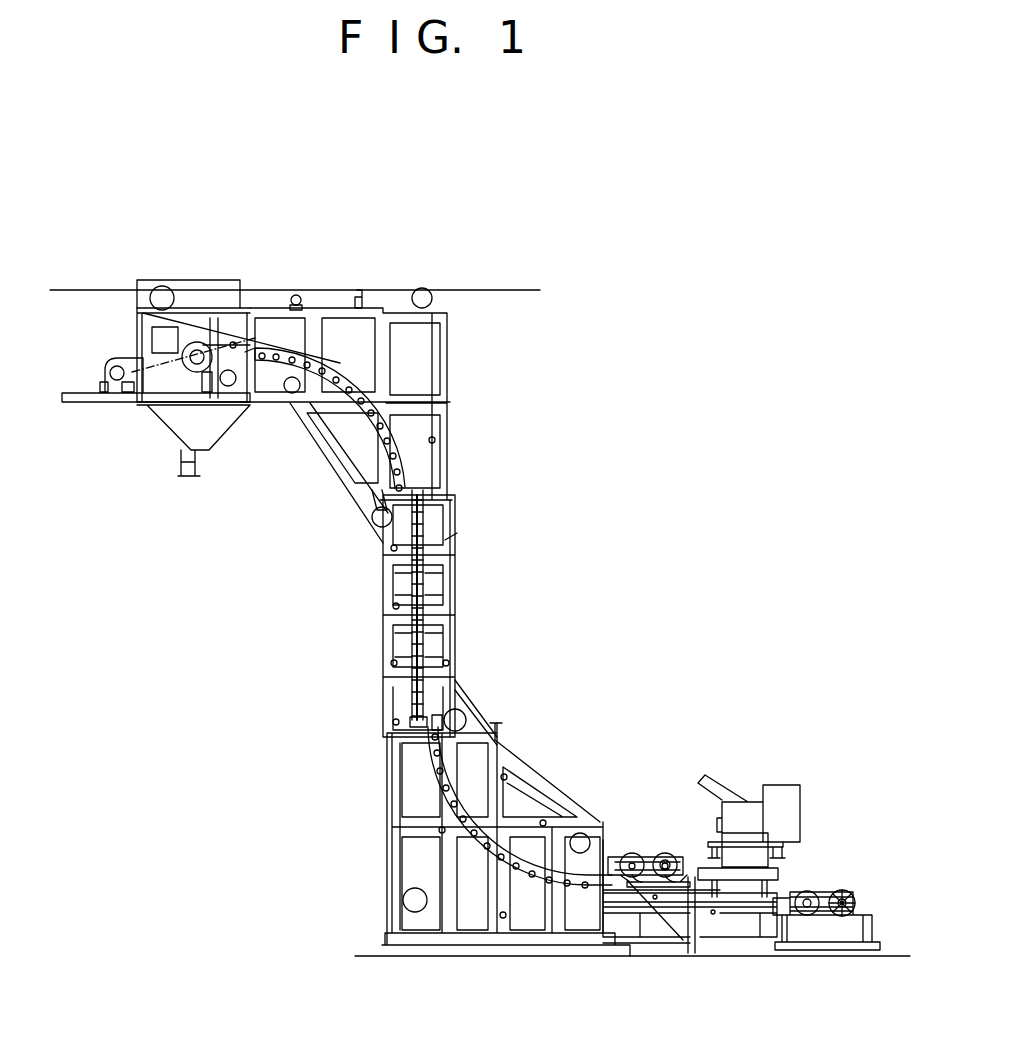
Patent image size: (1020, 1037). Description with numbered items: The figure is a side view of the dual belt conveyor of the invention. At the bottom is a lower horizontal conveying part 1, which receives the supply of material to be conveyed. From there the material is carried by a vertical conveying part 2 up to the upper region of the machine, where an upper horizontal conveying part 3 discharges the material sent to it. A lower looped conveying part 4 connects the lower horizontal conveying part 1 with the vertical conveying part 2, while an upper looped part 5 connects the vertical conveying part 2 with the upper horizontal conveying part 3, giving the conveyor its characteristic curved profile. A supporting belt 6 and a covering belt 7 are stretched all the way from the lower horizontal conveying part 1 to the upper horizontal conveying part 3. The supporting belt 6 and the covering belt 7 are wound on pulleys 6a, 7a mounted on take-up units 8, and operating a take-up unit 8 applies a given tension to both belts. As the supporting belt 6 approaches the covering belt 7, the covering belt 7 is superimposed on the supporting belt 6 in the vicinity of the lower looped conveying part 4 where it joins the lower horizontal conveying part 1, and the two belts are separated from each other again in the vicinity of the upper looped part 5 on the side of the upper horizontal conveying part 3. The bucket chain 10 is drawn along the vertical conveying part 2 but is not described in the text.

The lower horizontal conveying part 1 is at (694, 863).
The vertical conveying part 2 is at (458, 640).
The upper horizontal conveying part 3 is at (200, 278).
The lower looped conveying part 4 is at (478, 853).
The upper looped part 5 is at (360, 365).
The supporting belt 6 is at (700, 893).
The pulley 6a is at (807, 892).
The covering belt 7 is at (630, 858).
The pulley 7a is at (632, 853).
The take-up unit 8 is at (667, 857).
The bucket chain 10 is at (423, 643).